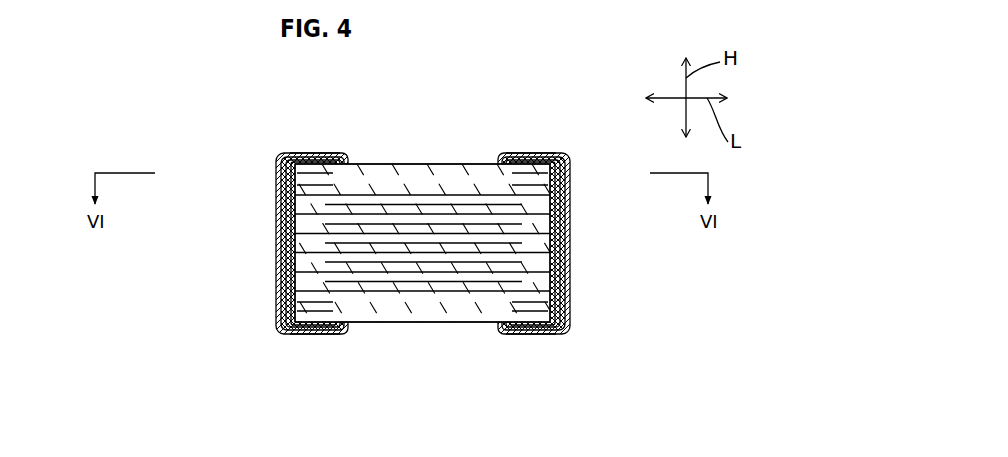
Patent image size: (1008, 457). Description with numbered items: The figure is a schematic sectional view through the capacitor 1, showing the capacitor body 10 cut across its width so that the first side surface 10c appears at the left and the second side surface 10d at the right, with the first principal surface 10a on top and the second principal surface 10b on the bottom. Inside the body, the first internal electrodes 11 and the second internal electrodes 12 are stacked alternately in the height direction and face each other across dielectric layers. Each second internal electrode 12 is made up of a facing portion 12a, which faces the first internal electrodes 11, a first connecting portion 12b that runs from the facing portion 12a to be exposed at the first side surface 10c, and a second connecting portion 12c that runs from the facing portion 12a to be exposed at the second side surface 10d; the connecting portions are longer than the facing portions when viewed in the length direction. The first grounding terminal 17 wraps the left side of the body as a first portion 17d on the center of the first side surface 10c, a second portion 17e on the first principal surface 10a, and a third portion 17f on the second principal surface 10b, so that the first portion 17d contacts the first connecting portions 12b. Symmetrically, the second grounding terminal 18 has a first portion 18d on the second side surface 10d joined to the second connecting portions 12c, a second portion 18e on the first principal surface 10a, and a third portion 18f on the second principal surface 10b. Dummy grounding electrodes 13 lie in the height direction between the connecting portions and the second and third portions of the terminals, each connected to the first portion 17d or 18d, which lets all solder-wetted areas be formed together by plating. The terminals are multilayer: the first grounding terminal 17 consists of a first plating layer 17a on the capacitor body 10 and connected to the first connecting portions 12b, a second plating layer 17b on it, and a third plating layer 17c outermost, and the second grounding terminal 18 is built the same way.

The multilayer ceramic capacitor 1 is at (619, 112).
The capacitor body 10 is at (450, 252).
The first principal surface 10a is at (372, 164).
The second principal surface 10b is at (365, 323).
The first side surface 10c is at (300, 300).
The second side surface 10d is at (560, 295).
The first internal electrode 11 is at (420, 293).
The second internal electrode 12 is at (473, 297).
The facing portion 12a is at (443, 292).
The first connecting portion 12b is at (302, 312).
The second connecting portion 12c is at (550, 317).
The dummy grounding electrode 13 is at (527, 175).
The first grounding terminal 17 is at (260, 237).
The first plating layer 17a is at (280, 173).
The second plating layer 17b is at (279, 192).
The third plating layer 17c is at (277, 212).
The first portion 17d is at (276, 232).
The second portion 17e is at (315, 151).
The third portion 17f is at (313, 339).
The second grounding terminal 18 is at (590, 239).
The first portion 18d is at (573, 235).
The second portion 18e is at (549, 151).
The third portion 18f is at (537, 339).